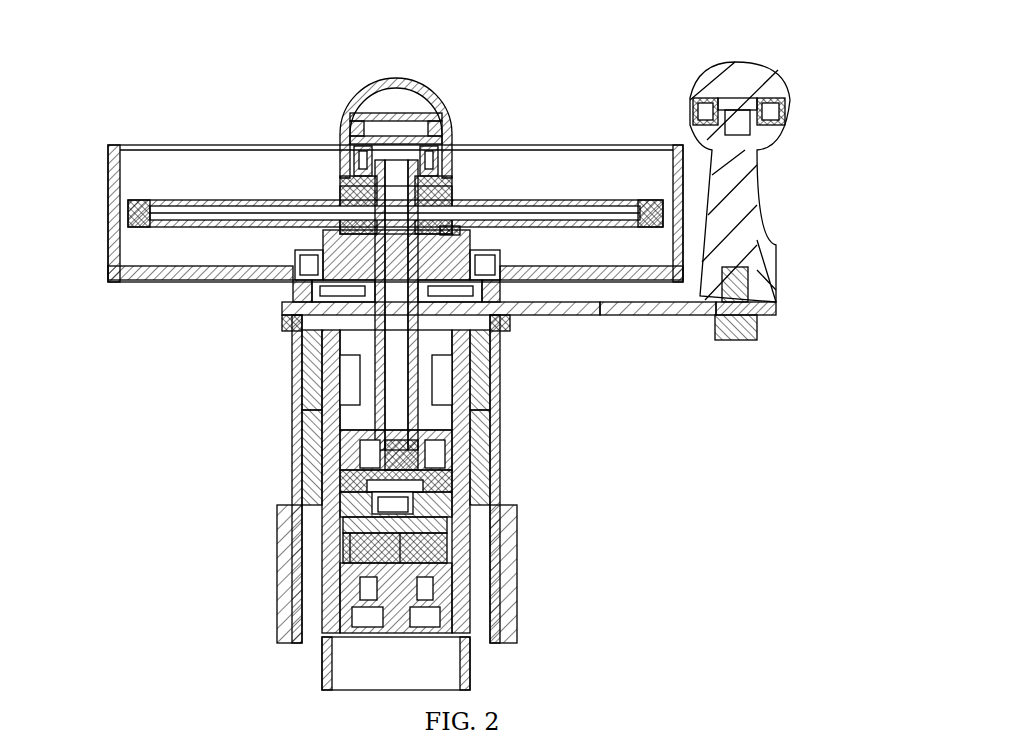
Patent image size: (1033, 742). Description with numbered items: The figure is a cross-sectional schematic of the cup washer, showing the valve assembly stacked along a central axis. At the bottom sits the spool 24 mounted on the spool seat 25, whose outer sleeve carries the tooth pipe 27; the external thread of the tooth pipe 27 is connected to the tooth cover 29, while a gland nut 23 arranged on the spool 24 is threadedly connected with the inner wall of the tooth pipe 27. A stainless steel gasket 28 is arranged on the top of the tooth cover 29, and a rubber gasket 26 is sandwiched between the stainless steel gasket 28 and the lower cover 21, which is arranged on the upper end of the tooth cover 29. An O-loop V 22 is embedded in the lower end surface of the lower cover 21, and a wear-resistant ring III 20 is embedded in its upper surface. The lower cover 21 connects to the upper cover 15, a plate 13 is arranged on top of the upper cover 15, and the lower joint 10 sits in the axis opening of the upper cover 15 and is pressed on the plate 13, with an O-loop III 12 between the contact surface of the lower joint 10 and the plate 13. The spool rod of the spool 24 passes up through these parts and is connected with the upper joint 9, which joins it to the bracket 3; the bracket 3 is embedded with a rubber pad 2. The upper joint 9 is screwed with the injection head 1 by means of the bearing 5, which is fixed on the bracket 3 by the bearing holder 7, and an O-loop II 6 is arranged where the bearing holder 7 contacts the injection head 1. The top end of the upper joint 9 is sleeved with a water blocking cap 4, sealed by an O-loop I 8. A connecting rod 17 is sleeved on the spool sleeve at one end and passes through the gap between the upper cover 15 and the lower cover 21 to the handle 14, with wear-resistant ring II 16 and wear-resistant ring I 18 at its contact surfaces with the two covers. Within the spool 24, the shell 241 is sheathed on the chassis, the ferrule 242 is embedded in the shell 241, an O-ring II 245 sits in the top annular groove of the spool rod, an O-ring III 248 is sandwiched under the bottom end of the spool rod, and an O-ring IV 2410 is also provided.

The injection head 1 is at (398, 80).
The rubber pad 2 is at (507, 195).
The bracket 3 is at (655, 198).
The water blocking cap 4 is at (364, 118).
The bearing 5 is at (352, 172).
The O-loop II 6 is at (452, 187).
The bearing holder 7 is at (338, 192).
The O-loop I 8 is at (436, 160).
The upper joint 9 is at (322, 200).
The lower joint 10 is at (333, 245).
The O-loop III 12 is at (322, 257).
The plate 13 is at (112, 278).
The handle 14 is at (752, 162).
The upper cover 15 is at (512, 285).
The wear-resistant ring II 16 is at (340, 300).
The connecting rod 17 is at (692, 308).
The wear-resistant ring I 18 is at (498, 319).
The wear-resistant ring III 20 is at (298, 320).
The lower cover 21 is at (290, 334).
The O-loop V 22 is at (292, 356).
The gland nut 23 is at (340, 400).
The spool 24 is at (487, 520).
The spool seat 25 is at (458, 588).
The rubber gasket 26 is at (506, 355).
The tooth pipe 27 is at (487, 478).
The stainless steel gasket 28 is at (506, 371).
The tooth cover 29 is at (505, 572).
The shell 241 is at (332, 446).
The ferrule 242 is at (340, 476).
The O-ring II 245 is at (458, 230).
The O-ring III 248 is at (422, 458).
The O-ring IV 2410 is at (352, 490).